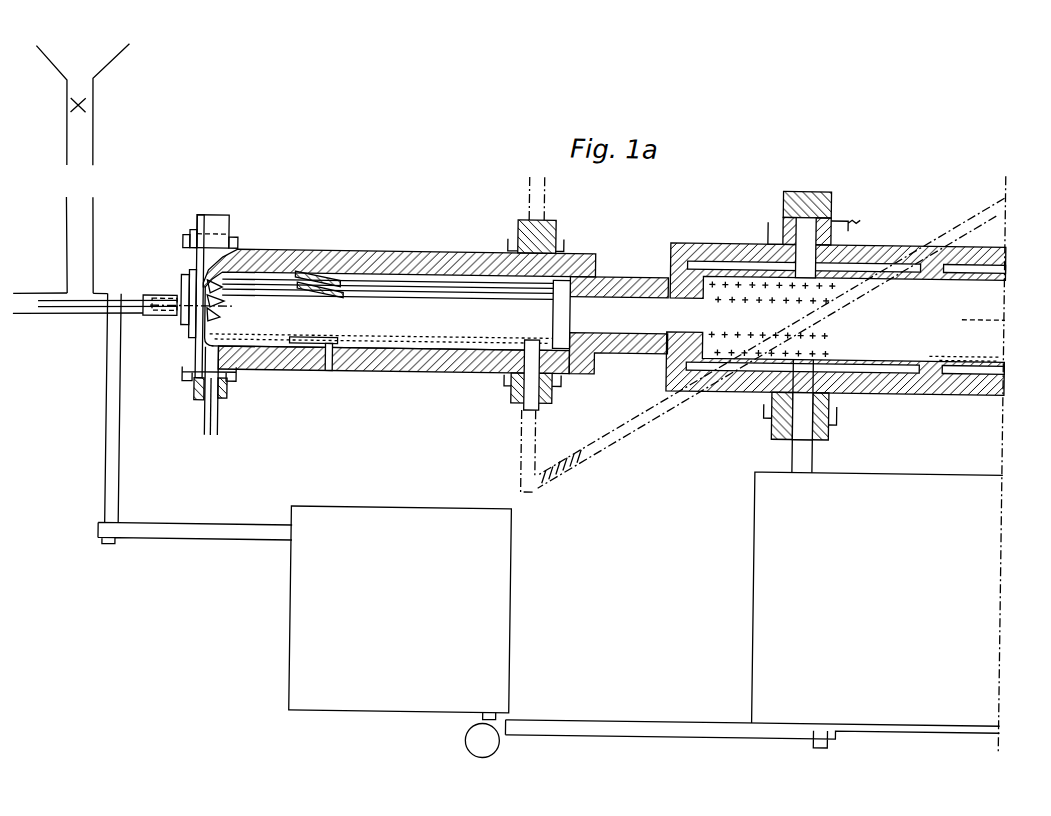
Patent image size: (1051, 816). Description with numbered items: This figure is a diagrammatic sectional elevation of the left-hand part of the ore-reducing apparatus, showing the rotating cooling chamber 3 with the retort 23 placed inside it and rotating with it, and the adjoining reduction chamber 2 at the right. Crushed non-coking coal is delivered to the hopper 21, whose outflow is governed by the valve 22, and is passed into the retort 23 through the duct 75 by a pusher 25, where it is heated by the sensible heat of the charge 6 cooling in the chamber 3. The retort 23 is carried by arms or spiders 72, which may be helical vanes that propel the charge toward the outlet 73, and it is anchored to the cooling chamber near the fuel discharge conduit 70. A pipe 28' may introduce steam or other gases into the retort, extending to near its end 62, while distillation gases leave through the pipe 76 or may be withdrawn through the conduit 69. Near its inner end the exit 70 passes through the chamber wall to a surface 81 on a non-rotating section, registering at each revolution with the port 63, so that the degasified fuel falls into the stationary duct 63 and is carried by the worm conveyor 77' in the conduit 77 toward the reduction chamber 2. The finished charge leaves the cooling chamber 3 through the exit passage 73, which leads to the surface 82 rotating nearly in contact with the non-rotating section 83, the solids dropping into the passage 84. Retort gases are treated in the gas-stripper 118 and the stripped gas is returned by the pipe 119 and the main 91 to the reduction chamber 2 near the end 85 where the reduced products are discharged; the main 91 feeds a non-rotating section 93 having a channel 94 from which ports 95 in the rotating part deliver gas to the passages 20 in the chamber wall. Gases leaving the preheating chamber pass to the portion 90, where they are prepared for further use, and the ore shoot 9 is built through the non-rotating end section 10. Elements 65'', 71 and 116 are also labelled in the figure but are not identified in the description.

The reduction chamber 2 is at (836, 319).
The cooling chamber 3 is at (317, 270).
The charge 6 is at (400, 346).
The shoot 9 is at (994, 451).
The non-rotating end section 10 is at (975, 321).
The passages 20 is at (943, 263).
The hopper 21 is at (87, 76).
The valve 22 is at (67, 105).
The retort 23 is at (438, 332).
The pusher 25 is at (69, 312).
The gas pipe 28' is at (388, 261).
The end of retort 62 is at (583, 340).
The fuel conduit 63 is at (523, 452).
The top flange plug 65'' is at (813, 223).
The gas withdrawal conduit 69 is at (540, 208).
The fuel discharge exit 70 is at (532, 358).
The inner drum 71 is at (543, 289).
The arms or spiders 72 is at (320, 284).
The exit passage 73 is at (210, 367).
The fuel charging duct 75 is at (96, 318).
The gas discharge pipe 76 is at (223, 278).
The conduit 77 is at (771, 342).
The worm conveyor 77' is at (576, 474).
The surface 81 is at (548, 394).
The expansion joint surface 82 is at (228, 385).
The non-rotating section 83 is at (223, 407).
The discharge passage 84 is at (208, 427).
The end of reduction chamber 85 is at (745, 298).
The gas preparation portion 90 is at (877, 599).
The gas main 91 is at (792, 445).
The non-rotating section 93 is at (827, 420).
The gas channel 94 is at (777, 421).
The ports 95 is at (773, 398).
The wheel 116 is at (477, 747).
The gas-stripper 118 is at (400, 613).
The gas pipe 119 is at (620, 732).